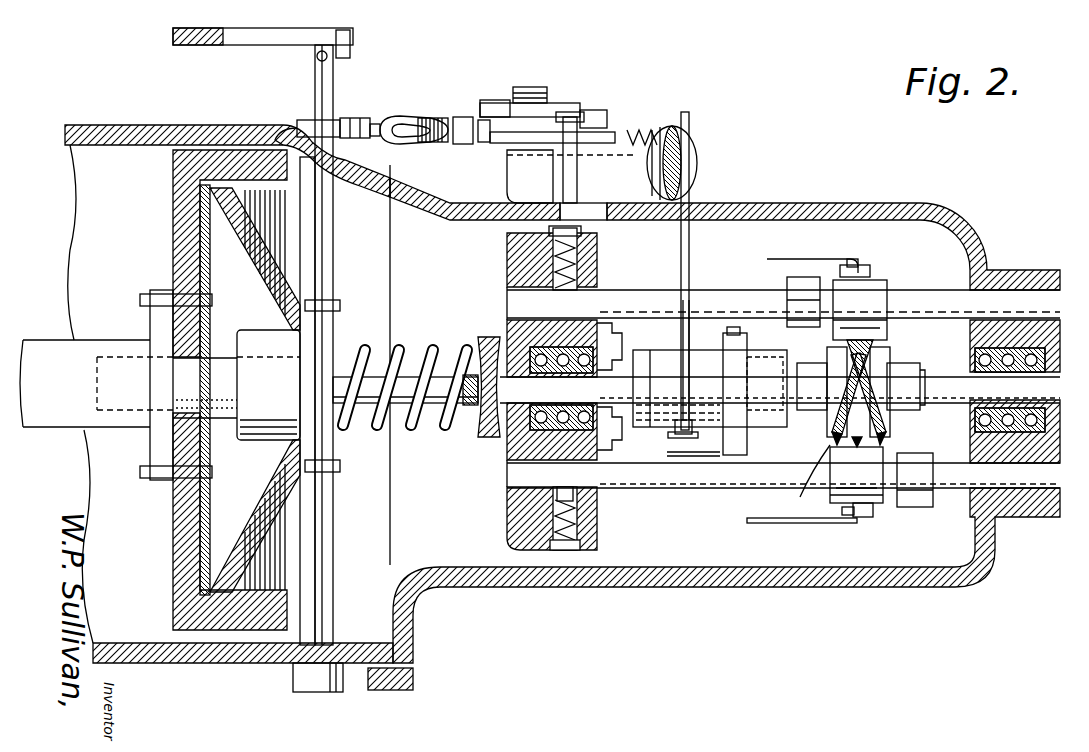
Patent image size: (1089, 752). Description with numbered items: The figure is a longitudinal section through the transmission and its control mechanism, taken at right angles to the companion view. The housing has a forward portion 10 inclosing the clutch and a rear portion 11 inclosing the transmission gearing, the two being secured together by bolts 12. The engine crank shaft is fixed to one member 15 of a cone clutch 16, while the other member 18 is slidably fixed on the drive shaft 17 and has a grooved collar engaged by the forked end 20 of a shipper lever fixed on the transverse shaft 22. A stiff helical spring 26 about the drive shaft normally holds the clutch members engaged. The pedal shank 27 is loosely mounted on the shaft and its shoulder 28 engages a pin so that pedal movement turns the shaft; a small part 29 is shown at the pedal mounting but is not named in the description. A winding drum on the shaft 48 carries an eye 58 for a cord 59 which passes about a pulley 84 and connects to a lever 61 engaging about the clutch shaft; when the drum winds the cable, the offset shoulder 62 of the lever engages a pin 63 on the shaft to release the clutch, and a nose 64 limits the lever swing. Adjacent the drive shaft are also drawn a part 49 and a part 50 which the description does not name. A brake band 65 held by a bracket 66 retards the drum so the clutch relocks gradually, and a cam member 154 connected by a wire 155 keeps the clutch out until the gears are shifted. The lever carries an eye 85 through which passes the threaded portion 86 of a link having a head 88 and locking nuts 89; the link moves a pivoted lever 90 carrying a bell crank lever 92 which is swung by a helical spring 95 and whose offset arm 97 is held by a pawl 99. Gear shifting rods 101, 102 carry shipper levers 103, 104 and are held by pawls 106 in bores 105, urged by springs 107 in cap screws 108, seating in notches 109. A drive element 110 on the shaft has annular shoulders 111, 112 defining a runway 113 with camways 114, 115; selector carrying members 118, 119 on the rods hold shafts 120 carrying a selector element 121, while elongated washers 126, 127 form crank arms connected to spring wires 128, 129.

The forward housing portion 10 is at (204, 662).
The rear housing portion 11 is at (655, 587).
The bolts 12 is at (364, 690).
The clutch member 15 is at (172, 524).
The cone clutch 16 is at (235, 453).
The drive shaft 17 is at (428, 412).
The clutch member 18 is at (242, 548).
The forked end 20 is at (340, 466).
The transverse shaft 22 is at (316, 520).
The helical spring 26 is at (440, 430).
The pedal shank 27 is at (207, 46).
The shoulder 28 is at (352, 45).
The ring 29 is at (316, 57).
The shaft 48 is at (958, 385).
The thrust collar 49 is at (486, 338).
The collar 50 is at (470, 408).
The eye 58 is at (672, 433).
The cord 59 is at (690, 265).
The lever 61 is at (340, 125).
The offset shoulder 62 is at (360, 118).
The pin 63 is at (292, 125).
The nose 64 is at (330, 121).
The brake band 65 is at (733, 370).
The bracket 66 is at (692, 330).
The pulley 84 is at (698, 168).
The eye 85 is at (414, 115).
The threaded portion 86 is at (440, 118).
The head 88 is at (380, 122).
The nuts 89 is at (466, 116).
The lever 90 is at (590, 130).
The bell crank lever 92 is at (554, 103).
The helical spring 95 is at (505, 150).
The arm 97 is at (503, 100).
The pawl 99 is at (530, 87).
The gear shifting rod 101 is at (708, 490).
The gear shifting rod 102 is at (912, 292).
The shipper lever 103 is at (915, 507).
The shipper lever 104 is at (790, 283).
The cylindrical bores 105 is at (522, 518).
The pawls 106 is at (580, 495).
The springs 107 is at (586, 520).
The cap screws 108 is at (560, 545).
The notches 109 is at (509, 484).
The drive element 110 is at (915, 368).
The annular shoulder 111 is at (925, 424).
The annular shoulder 112 is at (842, 430).
The runway 113 is at (876, 382).
The camway 114 is at (884, 428).
The camway 115 is at (836, 410).
The selector carrying member 118 is at (829, 495).
The selector carrying member 119 is at (878, 283).
The shafts 120 is at (863, 367).
The selector element 121 is at (801, 480).
The elongated washer 126 is at (866, 517).
The elongated washer 127 is at (863, 265).
The spring wire 128 is at (807, 524).
The spring wire 129 is at (810, 259).
The cam member 154 is at (748, 445).
The wire 155 is at (668, 455).